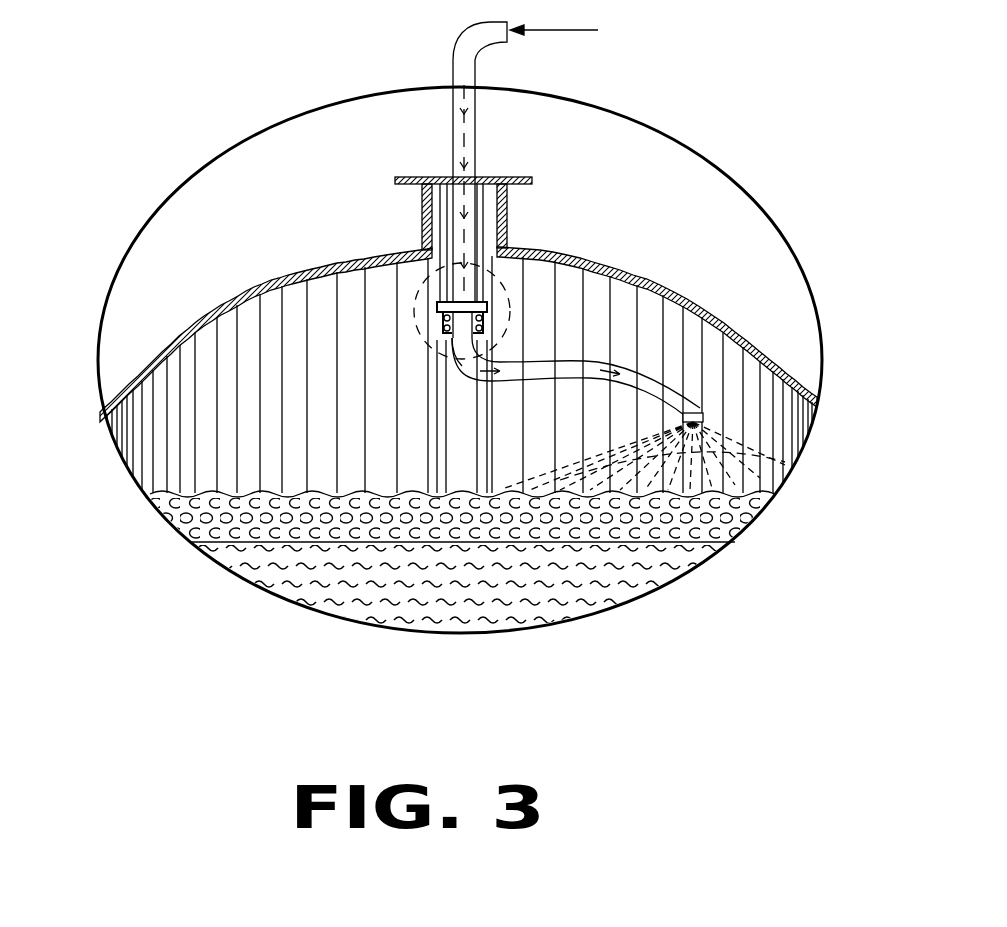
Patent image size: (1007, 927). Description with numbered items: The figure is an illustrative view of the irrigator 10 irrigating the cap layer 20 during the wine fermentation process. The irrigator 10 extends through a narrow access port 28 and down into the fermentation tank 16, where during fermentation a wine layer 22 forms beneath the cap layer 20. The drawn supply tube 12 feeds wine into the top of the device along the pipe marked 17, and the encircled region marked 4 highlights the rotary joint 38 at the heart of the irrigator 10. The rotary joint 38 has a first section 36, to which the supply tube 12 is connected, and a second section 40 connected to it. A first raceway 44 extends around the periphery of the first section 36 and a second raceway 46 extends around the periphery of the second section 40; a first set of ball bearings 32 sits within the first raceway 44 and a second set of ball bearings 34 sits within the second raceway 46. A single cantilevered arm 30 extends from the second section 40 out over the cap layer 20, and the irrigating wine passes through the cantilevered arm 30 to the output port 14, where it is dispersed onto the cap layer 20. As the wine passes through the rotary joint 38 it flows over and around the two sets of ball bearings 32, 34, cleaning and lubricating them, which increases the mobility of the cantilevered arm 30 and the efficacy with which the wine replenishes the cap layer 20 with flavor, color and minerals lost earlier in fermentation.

The detail circle (FIG. 4 region) 4 is at (417, 300).
The irrigator 10 is at (640, 203).
The supply tube 12 is at (573, 27).
The output port 14 is at (690, 400).
The fermentation tank 16 is at (257, 284).
The inlet pipe 17 is at (453, 48).
The cap layer 20 is at (472, 492).
The wine layer 22 is at (622, 590).
The access port 28 is at (443, 177).
The single cantilevered arm 30 is at (705, 410).
The first set of ball bearings 32 is at (442, 320).
The second set of ball bearings 34 is at (442, 340).
The first section 36 is at (437, 310).
The rotary joint 38 is at (488, 312).
The second section 40 is at (442, 332).
The first raceway 44 is at (508, 300).
The second raceway 46 is at (483, 340).